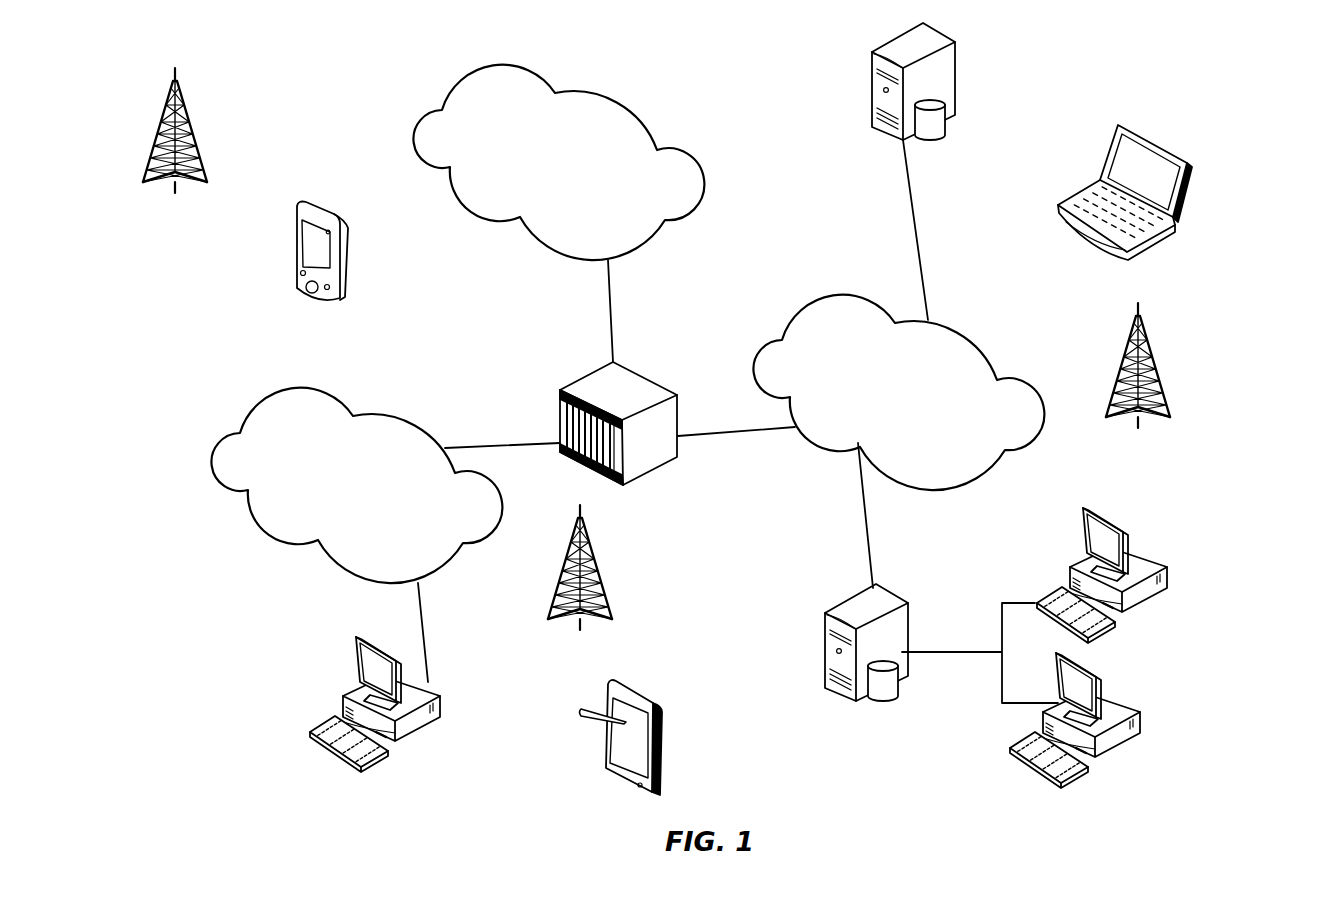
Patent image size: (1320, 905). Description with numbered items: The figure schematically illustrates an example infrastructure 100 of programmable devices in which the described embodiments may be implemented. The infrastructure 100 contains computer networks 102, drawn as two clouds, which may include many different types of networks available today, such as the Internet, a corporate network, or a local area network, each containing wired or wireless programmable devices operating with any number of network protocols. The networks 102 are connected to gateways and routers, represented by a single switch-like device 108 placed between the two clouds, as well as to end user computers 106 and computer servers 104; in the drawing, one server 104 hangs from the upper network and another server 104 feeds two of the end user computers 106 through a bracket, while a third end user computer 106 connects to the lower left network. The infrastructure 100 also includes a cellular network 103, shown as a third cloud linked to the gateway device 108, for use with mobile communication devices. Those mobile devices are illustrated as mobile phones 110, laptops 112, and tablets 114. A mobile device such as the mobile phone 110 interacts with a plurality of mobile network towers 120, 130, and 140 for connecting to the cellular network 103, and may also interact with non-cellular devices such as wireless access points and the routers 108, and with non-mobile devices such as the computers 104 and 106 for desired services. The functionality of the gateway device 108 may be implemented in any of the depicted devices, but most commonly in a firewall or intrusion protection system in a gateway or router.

The infrastructure 100 is at (1038, 115).
The computer networks 102 is at (340, 403).
The cellular network 103 is at (603, 98).
The computer servers 104 is at (875, 73).
The end user computers 106 is at (443, 697).
The gateways and routers 108 is at (640, 375).
The mobile phones 110 is at (330, 207).
The laptops 112 is at (1167, 150).
The tablets 114 is at (645, 693).
The mobile network tower 120 is at (580, 582).
The mobile network tower 130 is at (1138, 381).
The mobile network tower 140 is at (175, 145).